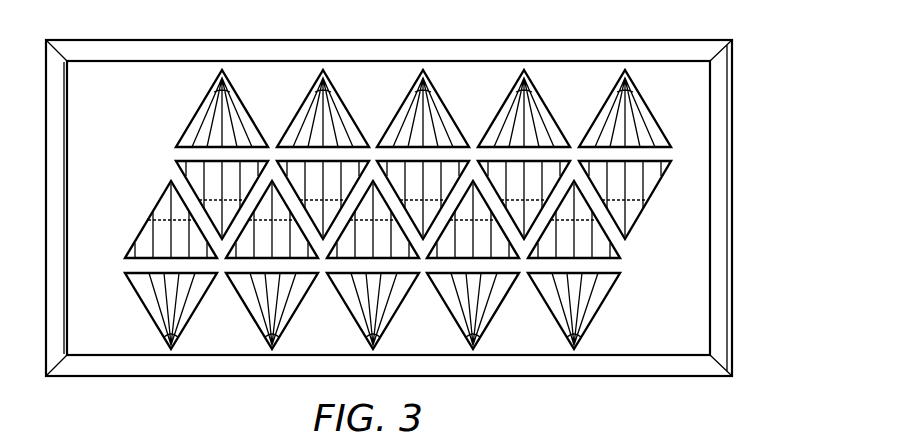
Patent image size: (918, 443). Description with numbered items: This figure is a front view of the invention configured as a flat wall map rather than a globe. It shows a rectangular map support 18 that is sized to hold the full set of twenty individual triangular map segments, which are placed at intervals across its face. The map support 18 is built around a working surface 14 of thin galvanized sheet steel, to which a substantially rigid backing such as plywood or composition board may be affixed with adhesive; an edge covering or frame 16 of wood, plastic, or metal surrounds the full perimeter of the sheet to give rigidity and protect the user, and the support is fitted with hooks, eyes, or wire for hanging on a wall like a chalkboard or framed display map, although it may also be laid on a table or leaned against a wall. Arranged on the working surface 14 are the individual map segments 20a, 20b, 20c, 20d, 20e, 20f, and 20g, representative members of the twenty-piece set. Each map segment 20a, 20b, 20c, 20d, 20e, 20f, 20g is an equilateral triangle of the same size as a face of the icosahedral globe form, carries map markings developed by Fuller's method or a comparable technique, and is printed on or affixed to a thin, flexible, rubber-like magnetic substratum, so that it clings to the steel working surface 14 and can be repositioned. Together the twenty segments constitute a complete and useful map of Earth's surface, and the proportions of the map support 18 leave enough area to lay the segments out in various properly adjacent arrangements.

The working surface 14 is at (682, 265).
The frame 16 is at (722, 303).
The map support 18 is at (743, 339).
The map segment 20a is at (543, 100).
The map segment 20b is at (638, 97).
The map segment 20c is at (512, 163).
The map segment 20d is at (655, 192).
The map segment 20e is at (618, 260).
The map segment 20f is at (597, 308).
The map segment 20g is at (393, 118).